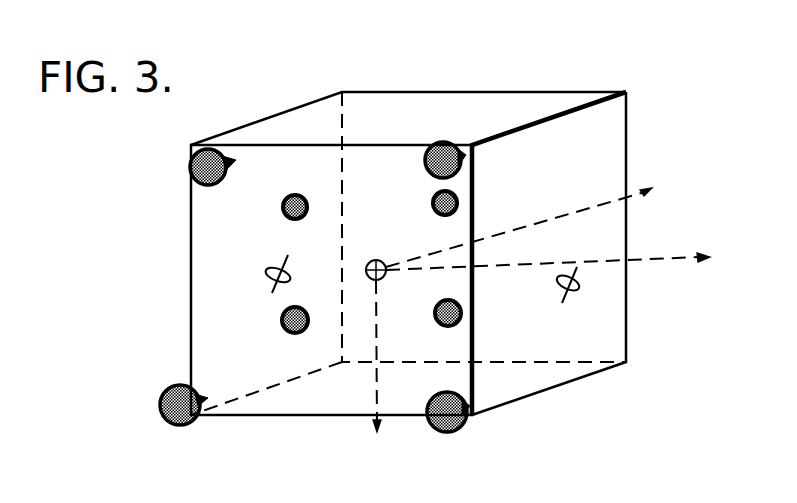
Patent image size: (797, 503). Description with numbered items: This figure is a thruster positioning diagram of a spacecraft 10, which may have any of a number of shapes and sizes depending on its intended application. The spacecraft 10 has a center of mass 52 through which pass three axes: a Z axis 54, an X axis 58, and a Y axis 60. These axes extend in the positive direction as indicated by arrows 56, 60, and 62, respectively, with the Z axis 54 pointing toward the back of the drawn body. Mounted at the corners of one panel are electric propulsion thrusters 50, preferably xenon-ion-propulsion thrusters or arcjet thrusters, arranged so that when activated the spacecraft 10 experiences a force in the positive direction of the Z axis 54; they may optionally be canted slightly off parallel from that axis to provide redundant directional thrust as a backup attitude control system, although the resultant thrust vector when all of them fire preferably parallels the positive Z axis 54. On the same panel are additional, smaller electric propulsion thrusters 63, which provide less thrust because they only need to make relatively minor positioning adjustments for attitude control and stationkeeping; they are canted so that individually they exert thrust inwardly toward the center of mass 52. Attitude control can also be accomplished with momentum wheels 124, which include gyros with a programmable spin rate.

The spacecraft 10 is at (553, 72).
The electric propulsion thrusters 50 is at (188, 167).
The center of mass 52 is at (373, 261).
The Z axis 54 is at (575, 210).
The arrow 56 is at (650, 184).
The X axis 58 is at (555, 266).
The Y axis 60 is at (708, 261).
The arrow 62 is at (381, 437).
The electric propulsion thrusters 63 is at (285, 195).
The momentum wheels 124 is at (268, 273).